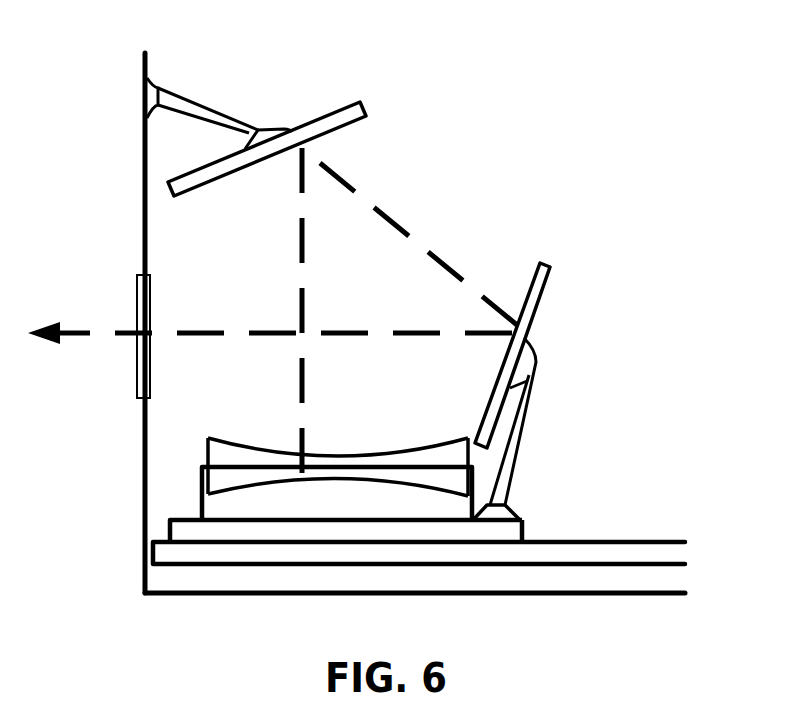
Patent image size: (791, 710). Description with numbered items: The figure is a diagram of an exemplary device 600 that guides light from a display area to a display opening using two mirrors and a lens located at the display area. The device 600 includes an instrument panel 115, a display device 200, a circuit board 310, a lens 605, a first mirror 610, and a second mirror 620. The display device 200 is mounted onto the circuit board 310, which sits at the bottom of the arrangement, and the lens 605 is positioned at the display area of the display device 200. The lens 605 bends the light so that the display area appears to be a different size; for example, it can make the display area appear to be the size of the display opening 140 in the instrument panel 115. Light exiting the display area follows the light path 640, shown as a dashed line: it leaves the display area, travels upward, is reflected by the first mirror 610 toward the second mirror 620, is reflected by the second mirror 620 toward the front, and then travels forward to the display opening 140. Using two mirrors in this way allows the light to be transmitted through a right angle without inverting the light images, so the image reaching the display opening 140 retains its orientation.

The device 600 is at (393, 306).
The first mirror 610 is at (143, 100).
The instrument panel 115 is at (142, 175).
The display opening 140 is at (136, 280).
The light path 640 is at (82, 340).
The lens 605 is at (385, 446).
The second mirror 620 is at (532, 403).
The display device 200 is at (473, 503).
The circuit board 310 is at (683, 554).